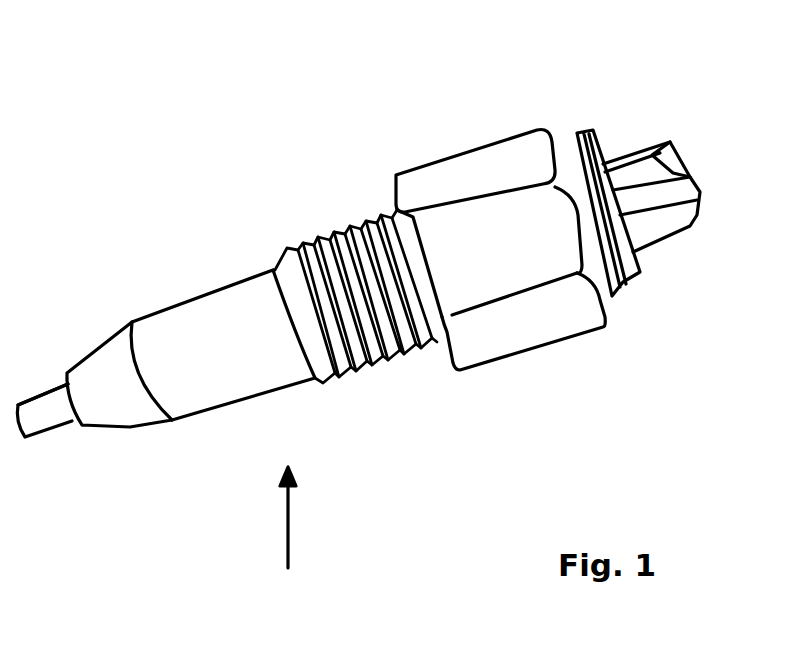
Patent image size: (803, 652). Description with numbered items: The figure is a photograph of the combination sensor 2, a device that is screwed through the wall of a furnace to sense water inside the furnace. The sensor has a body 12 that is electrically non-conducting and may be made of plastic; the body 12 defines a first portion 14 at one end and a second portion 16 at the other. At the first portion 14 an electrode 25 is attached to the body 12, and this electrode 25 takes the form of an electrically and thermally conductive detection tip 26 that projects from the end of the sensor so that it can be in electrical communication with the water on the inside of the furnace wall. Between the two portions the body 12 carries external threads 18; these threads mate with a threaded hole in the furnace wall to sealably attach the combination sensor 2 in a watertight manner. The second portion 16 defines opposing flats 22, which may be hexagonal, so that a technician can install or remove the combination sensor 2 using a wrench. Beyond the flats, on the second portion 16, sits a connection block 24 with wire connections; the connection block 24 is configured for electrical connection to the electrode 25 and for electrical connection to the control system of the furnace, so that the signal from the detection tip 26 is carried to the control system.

The combination sensor 2 is at (288, 543).
The body 12 is at (223, 290).
The first portion 14 is at (103, 350).
The second portion 16 is at (583, 132).
The external threads 18 is at (299, 248).
The opposing flats 22 is at (573, 302).
The connection block 24 is at (668, 140).
The electrode 25 is at (38, 395).
The detection tip 26 is at (55, 425).